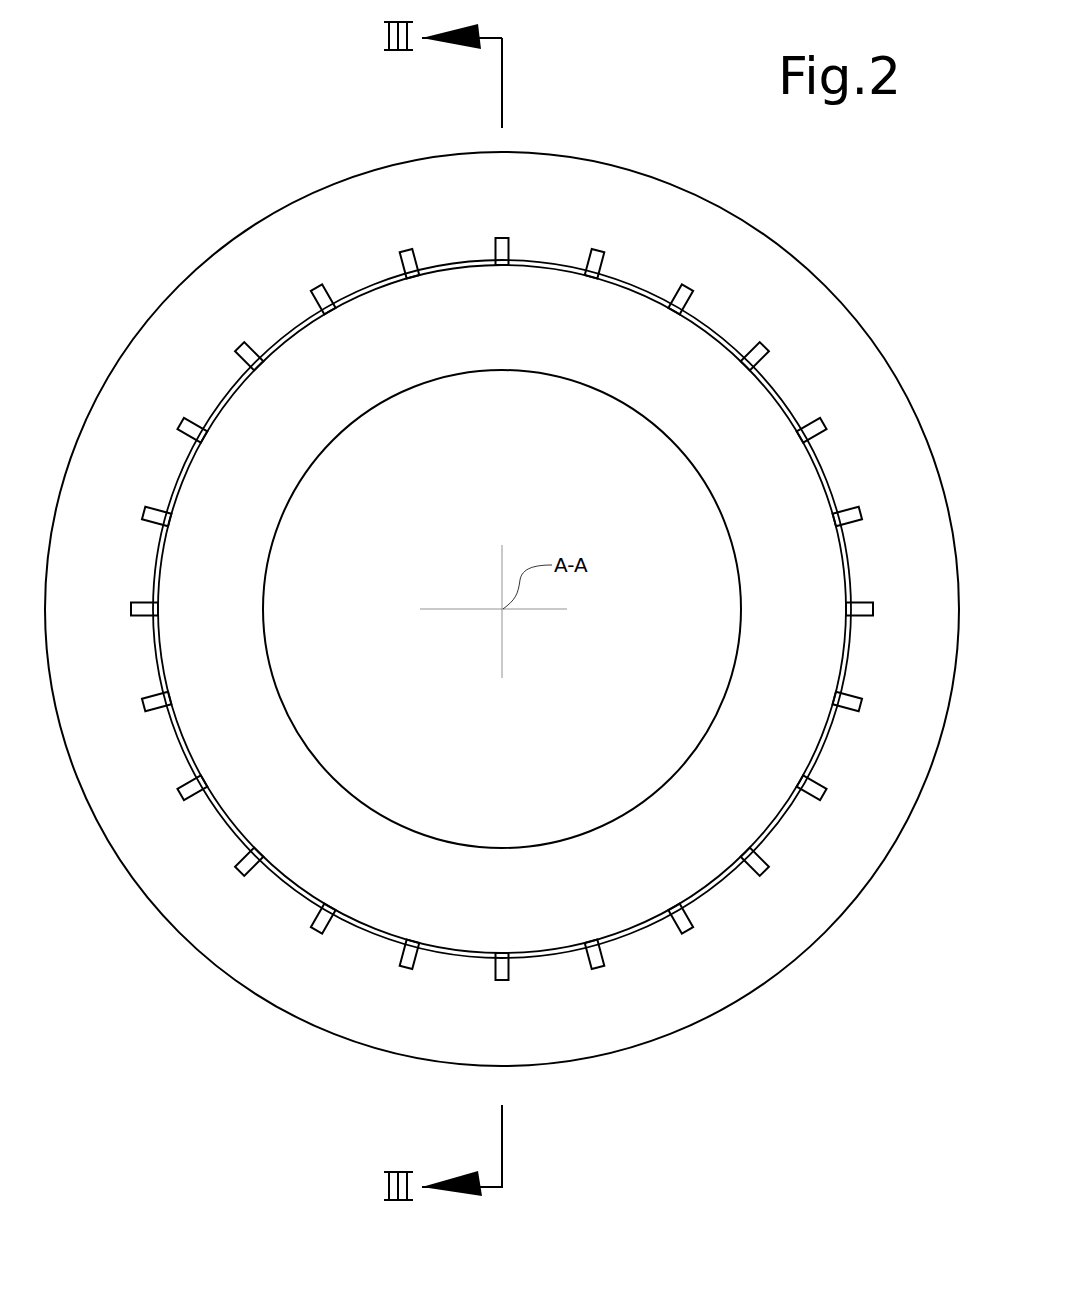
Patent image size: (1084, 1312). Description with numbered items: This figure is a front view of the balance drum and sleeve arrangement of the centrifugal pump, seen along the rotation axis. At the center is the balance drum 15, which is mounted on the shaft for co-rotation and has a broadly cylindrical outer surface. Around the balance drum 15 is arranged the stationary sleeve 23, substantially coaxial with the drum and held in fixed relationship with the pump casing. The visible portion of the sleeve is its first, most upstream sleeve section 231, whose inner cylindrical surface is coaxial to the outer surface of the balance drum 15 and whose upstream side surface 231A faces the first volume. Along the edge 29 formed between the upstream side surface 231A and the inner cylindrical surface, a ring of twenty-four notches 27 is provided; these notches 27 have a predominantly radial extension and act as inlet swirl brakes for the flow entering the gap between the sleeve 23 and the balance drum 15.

The sleeve 23 is at (655, 127).
The first sleeve section 231 is at (748, 215).
The upstream side surface 231A is at (573, 215).
The balance drum 15 is at (680, 386).
The notches 27 is at (240, 378).
The edge 29 is at (394, 935).